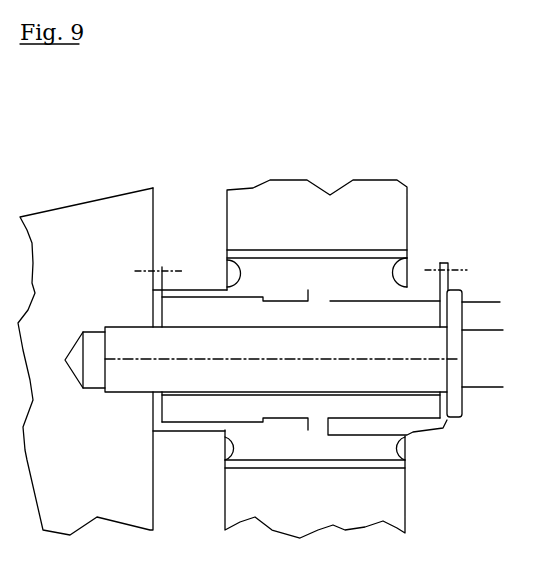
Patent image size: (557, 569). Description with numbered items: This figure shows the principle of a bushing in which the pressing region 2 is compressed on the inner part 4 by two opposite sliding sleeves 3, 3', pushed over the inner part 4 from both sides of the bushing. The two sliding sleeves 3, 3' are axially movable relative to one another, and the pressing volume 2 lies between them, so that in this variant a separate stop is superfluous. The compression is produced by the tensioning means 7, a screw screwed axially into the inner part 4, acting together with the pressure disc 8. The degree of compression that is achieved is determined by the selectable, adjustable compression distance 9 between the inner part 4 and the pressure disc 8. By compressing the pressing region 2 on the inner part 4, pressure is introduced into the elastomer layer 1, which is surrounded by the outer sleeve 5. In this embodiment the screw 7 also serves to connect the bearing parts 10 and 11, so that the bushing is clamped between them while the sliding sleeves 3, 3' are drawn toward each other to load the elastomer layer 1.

The elastomer layer 1 is at (318, 268).
The pressing region 2 is at (316, 290).
The sliding sleeve 3 is at (388, 405).
The sliding sleeve 3' is at (296, 451).
The inner part 4 is at (232, 310).
The outer sleeve 5 is at (323, 245).
The screw 7 is at (483, 320).
The pressure disc 8 is at (453, 418).
The compression distance 9 is at (163, 268).
The bearing part 10 is at (387, 215).
The bearing part 11 is at (118, 225).